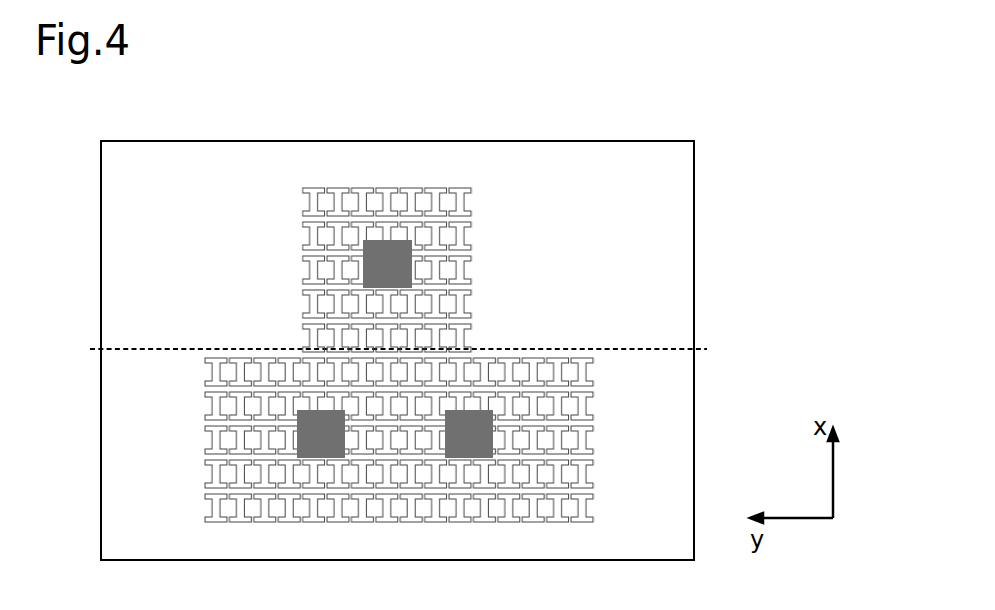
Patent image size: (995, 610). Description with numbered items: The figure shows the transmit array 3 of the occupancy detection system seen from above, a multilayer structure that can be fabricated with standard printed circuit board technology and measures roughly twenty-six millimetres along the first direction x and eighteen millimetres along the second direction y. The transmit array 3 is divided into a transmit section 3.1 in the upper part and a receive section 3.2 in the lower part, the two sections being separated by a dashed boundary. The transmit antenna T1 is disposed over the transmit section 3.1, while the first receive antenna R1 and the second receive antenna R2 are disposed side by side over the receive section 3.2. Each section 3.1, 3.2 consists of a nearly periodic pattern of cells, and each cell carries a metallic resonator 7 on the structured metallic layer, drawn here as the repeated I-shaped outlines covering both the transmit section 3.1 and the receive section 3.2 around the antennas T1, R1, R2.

The transmit array 3 is at (694, 190).
The transmit section 3.1 is at (658, 293).
The receive section 3.2 is at (657, 480).
The metallic resonator 7 is at (462, 190).
The transmit antenna T1 is at (367, 240).
The first receive antenna R1 is at (298, 410).
The second receive antenna R2 is at (493, 412).